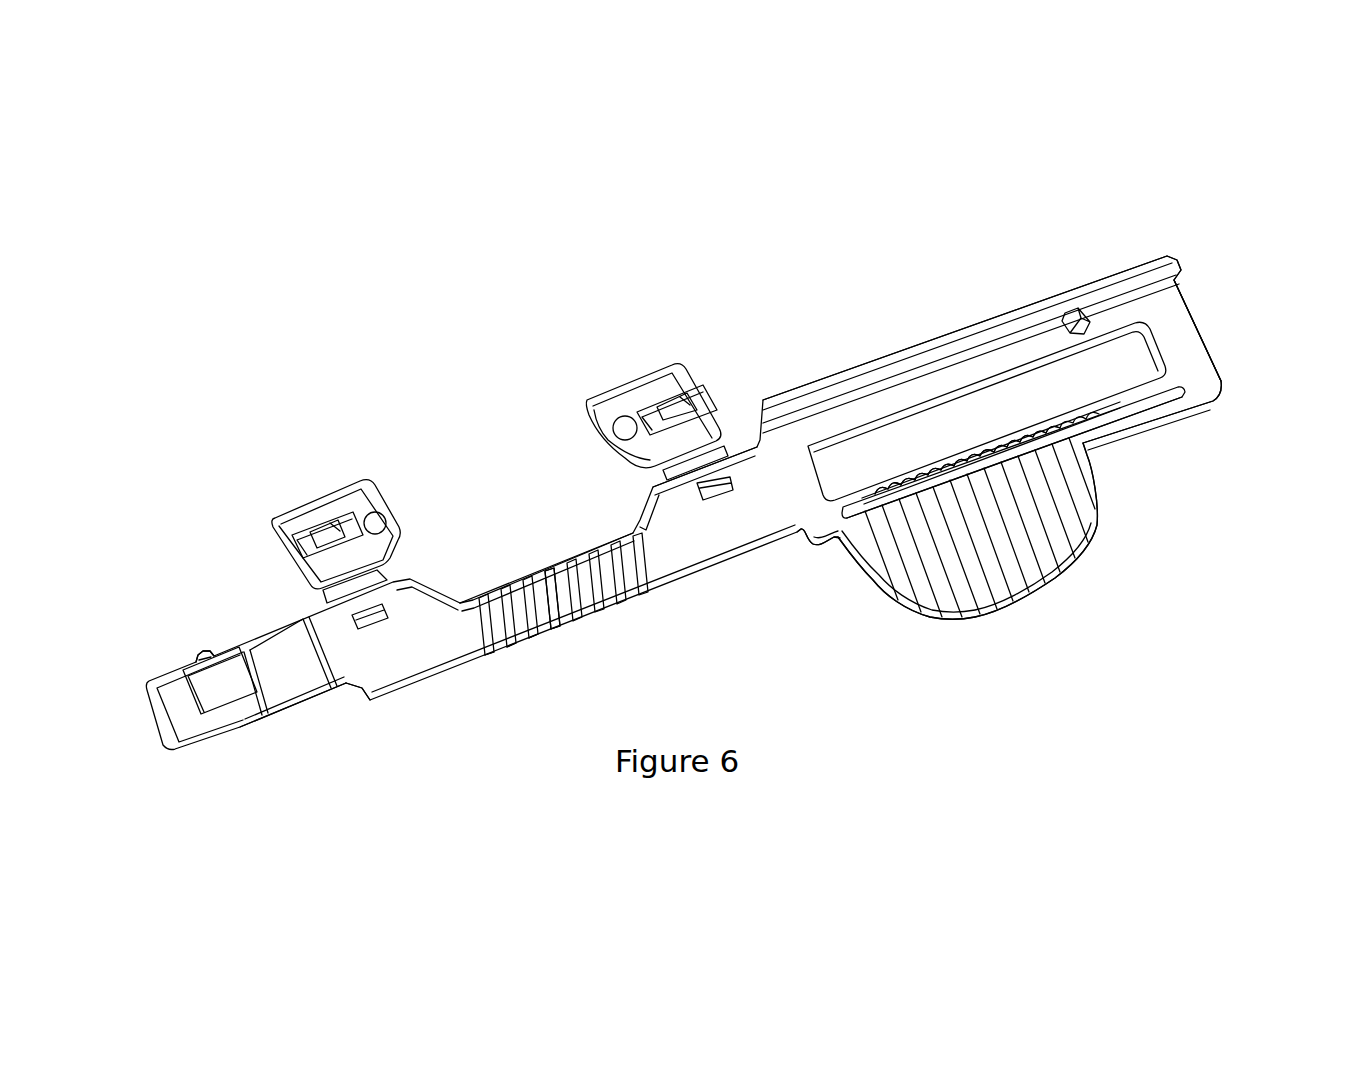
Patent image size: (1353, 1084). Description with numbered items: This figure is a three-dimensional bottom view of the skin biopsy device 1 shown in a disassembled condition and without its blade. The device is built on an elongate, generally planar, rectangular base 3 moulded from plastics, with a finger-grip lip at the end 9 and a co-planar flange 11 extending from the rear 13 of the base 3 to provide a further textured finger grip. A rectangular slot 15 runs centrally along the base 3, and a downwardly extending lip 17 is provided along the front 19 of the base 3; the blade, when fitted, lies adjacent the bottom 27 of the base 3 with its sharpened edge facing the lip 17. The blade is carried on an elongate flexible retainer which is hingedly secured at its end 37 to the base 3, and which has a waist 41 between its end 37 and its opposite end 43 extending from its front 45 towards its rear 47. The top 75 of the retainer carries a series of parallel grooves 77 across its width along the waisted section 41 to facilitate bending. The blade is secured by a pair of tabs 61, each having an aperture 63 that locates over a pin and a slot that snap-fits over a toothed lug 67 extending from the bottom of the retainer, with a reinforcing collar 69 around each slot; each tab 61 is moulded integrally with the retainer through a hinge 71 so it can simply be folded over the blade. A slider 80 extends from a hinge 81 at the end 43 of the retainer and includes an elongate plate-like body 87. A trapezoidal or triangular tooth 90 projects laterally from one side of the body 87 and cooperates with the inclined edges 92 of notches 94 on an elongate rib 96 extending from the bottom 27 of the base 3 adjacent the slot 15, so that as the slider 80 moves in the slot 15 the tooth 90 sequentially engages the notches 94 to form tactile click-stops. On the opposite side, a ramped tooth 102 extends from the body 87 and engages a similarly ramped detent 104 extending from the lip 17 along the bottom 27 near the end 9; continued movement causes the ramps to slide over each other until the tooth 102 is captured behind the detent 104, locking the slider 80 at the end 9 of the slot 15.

The skin biopsy device 1 is at (1082, 591).
The base 3 is at (1044, 392).
The end 9 is at (1202, 316).
The flange 11 is at (1080, 543).
The rear 13 is at (1174, 440).
The slot 15 is at (916, 447).
The lip 17 is at (923, 343).
The front 19 is at (971, 299).
The bottom 27 is at (1187, 354).
The end 37 is at (789, 564).
The waist 41 is at (544, 604).
The end 43 is at (363, 712).
The front 45 is at (542, 567).
The rear 47 is at (558, 636).
The tab 61 is at (486, 429).
The aperture 63 is at (384, 514).
The toothed lug 67 is at (318, 533).
The reinforcing collar 69 is at (303, 543).
The hinge 71 is at (380, 582).
The top 75 is at (713, 542).
The grooves 77 is at (532, 651).
The slider 80 is at (178, 661).
The hinge 81 is at (348, 675).
The body 87 is at (283, 657).
The tooth 90 is at (240, 722).
The inclined edges 92 is at (1001, 436).
The notches 94 is at (1040, 416).
The rib 96 is at (1130, 405).
The ramped tooth 102 is at (207, 648).
The detent 104 is at (1072, 310).